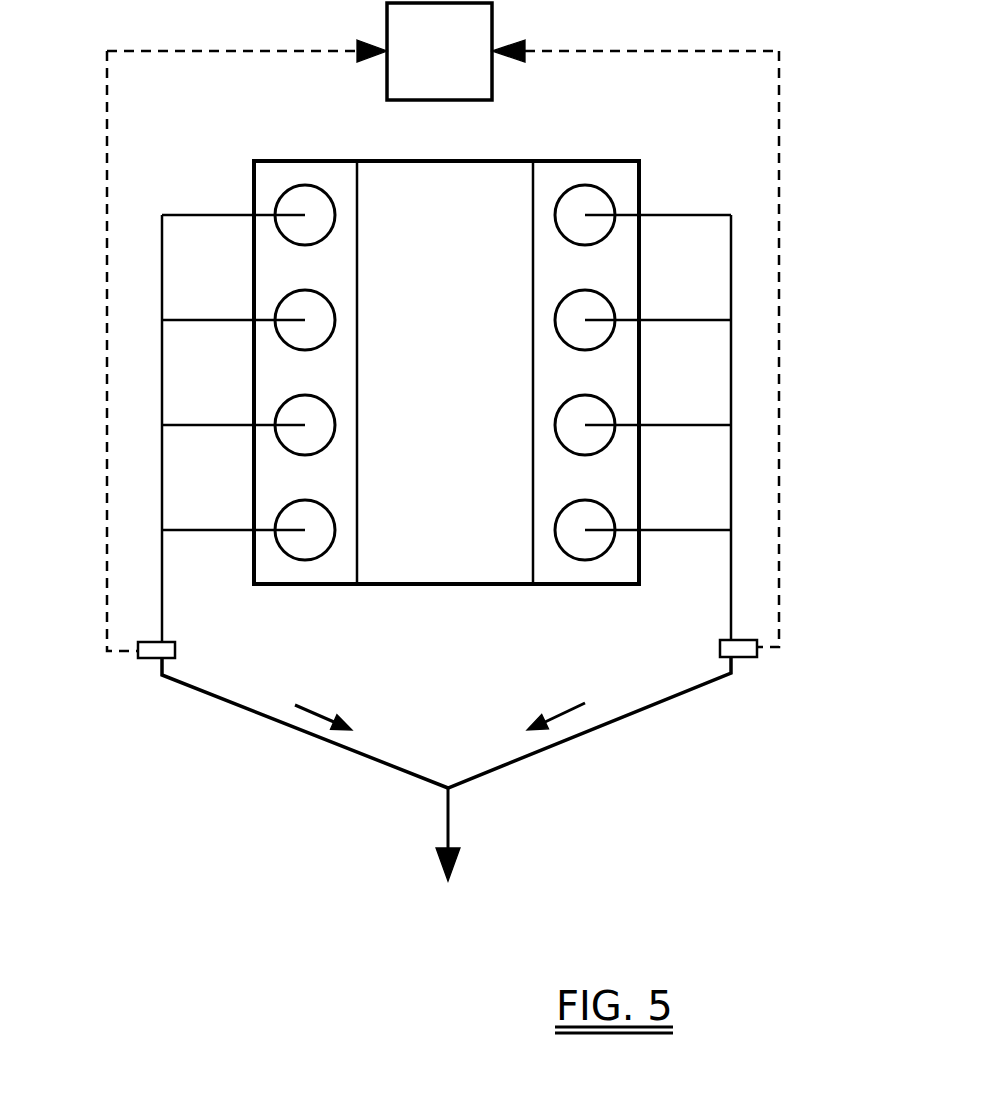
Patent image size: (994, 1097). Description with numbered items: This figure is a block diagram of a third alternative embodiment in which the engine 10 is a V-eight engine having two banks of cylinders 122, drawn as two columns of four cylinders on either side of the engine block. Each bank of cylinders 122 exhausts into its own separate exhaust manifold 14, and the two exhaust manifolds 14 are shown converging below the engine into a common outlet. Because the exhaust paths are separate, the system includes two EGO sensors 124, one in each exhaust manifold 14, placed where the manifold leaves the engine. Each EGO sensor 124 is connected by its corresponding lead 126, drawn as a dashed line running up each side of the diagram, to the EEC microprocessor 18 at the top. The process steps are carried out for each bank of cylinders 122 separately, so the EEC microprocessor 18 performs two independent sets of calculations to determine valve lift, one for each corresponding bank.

The EEC microprocessor 18 is at (492, 18).
The banks of cylinders 122 is at (312, 187).
The leads 126 is at (107, 283).
The EGO sensors 124 is at (150, 660).
The engine 10 is at (483, 587).
The exhaust manifolds 14 is at (320, 745).